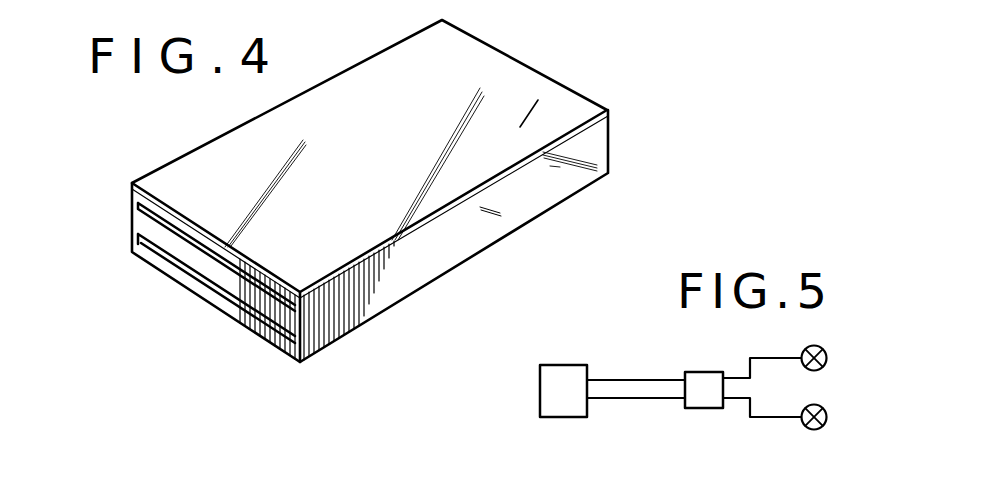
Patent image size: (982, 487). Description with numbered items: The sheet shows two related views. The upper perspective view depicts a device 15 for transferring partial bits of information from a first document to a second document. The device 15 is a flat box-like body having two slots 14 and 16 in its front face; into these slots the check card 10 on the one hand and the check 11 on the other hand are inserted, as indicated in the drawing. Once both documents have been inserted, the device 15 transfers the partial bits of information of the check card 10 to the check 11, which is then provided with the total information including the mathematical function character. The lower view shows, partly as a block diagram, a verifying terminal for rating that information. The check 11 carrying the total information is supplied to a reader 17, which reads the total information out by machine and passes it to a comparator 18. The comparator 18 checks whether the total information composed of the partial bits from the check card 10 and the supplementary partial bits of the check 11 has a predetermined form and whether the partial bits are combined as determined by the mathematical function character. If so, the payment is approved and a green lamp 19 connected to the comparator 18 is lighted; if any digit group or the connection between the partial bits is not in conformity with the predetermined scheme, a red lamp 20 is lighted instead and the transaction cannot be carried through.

In FIG. 4, the check card 10 is at (164, 252).
In FIG. 4, the check 11 is at (172, 288).
In FIG. 4, the slot 14 is at (137, 204).
In FIG. 4, the device 15 is at (557, 79).
In FIG. 4, the slot 16 is at (140, 237).
In FIG. 5, the reader 17 is at (558, 412).
In FIG. 5, the comparator 18 is at (712, 372).
In FIG. 5, the green lamp 19 is at (824, 351).
In FIG. 5, the red lamp 20 is at (822, 428).